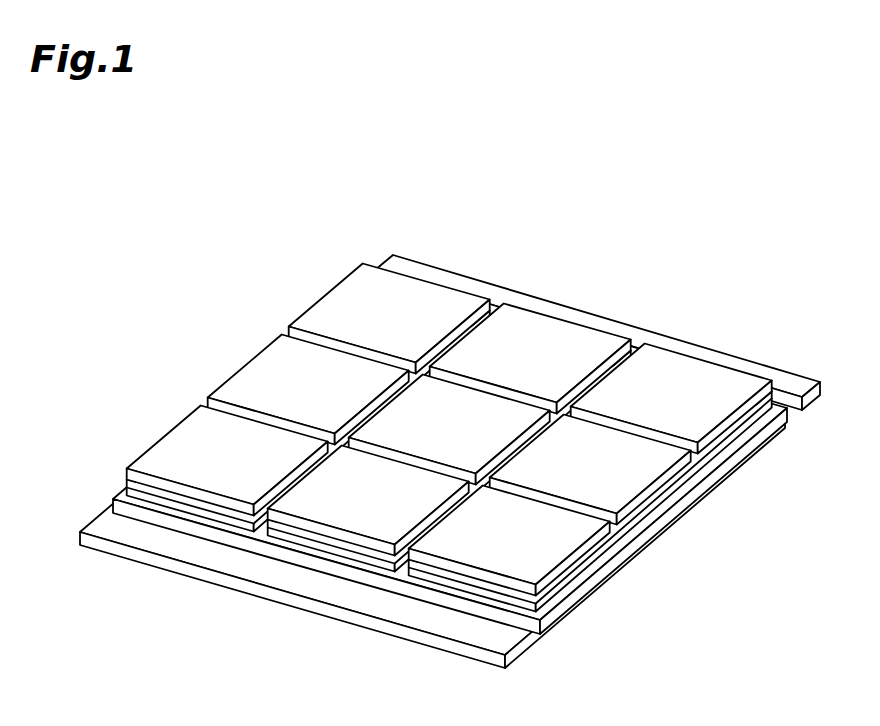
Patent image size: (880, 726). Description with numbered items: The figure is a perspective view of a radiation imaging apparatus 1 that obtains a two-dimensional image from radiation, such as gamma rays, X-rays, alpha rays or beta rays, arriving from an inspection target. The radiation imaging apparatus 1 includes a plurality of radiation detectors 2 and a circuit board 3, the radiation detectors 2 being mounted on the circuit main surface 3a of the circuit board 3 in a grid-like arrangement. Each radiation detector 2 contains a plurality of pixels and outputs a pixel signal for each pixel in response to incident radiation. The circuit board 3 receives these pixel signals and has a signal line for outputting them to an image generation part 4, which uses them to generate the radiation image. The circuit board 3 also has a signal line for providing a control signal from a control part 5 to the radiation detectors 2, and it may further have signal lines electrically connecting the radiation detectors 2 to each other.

The radiation imaging apparatus 1 is at (710, 250).
The radiation detector 2 is at (338, 298).
The circuit board 3 is at (757, 445).
The circuit main surface 3a is at (703, 477).
The image generation part 4 is at (800, 383).
The control part 5 is at (103, 523).